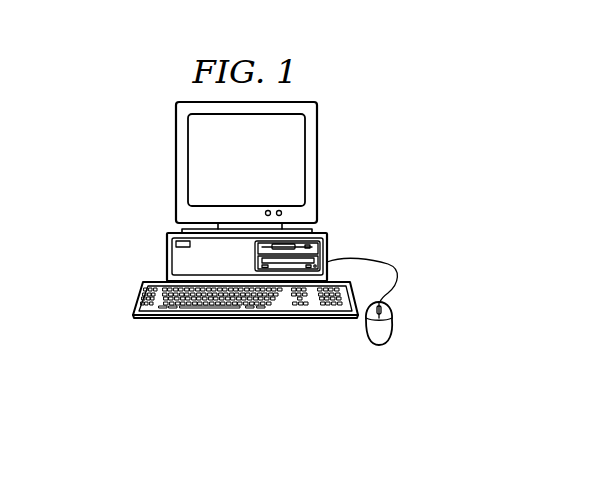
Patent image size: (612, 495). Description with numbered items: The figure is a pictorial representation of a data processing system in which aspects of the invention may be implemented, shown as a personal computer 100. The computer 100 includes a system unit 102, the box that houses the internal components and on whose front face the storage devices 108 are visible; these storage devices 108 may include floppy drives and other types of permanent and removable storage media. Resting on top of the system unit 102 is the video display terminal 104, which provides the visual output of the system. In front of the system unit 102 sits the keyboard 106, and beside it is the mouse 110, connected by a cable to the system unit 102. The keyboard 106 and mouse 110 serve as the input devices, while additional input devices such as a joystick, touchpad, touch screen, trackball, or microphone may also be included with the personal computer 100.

The computer 100 is at (118, 157).
The system unit 102 is at (167, 253).
The video display terminal 104 is at (317, 163).
The keyboard 106 is at (162, 319).
The storage devices 108 is at (299, 244).
The mouse 110 is at (380, 347).